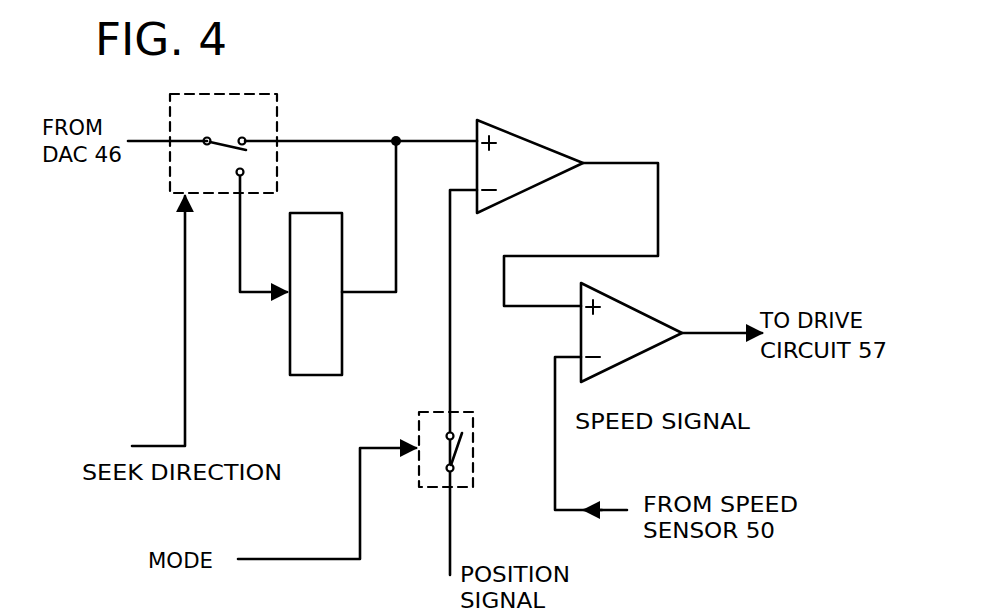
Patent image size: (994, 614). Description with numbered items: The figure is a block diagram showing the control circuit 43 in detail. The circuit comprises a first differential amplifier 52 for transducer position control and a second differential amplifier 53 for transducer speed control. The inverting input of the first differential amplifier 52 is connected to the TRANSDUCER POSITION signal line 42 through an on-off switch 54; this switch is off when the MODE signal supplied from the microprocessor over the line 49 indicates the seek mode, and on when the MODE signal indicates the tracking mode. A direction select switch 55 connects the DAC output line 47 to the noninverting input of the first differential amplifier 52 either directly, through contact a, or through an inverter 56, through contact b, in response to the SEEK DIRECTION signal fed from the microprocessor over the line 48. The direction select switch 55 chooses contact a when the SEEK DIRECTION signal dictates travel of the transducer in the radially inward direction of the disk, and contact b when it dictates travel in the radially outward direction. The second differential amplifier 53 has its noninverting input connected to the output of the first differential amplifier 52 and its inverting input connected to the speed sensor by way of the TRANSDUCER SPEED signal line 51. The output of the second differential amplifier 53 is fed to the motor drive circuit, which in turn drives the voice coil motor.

The TRANSDUCER POSITION signal line 42 is at (449, 515).
The control circuit 43 is at (662, 134).
The DAC output line 47 is at (141, 141).
The SEEK DIRECTION signal line 48 is at (185, 375).
The MODE signal line 49 is at (300, 559).
The TRANSDUCER SPEED signal line 51 is at (555, 478).
The first differential amplifier 52 is at (540, 145).
The second differential amplifier 53 is at (660, 322).
The on-off switch 54 is at (476, 409).
The direction select switch 55 is at (279, 126).
The inverter 56 is at (343, 355).